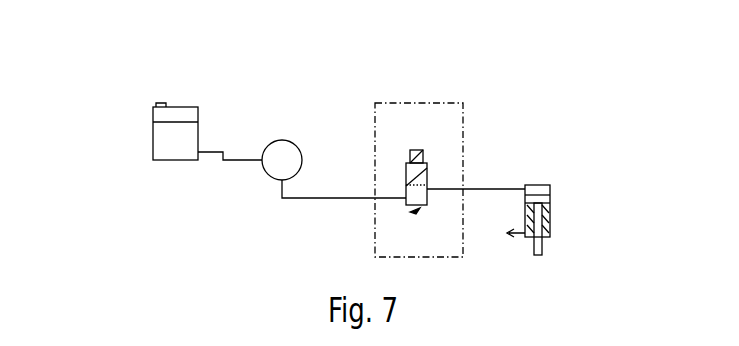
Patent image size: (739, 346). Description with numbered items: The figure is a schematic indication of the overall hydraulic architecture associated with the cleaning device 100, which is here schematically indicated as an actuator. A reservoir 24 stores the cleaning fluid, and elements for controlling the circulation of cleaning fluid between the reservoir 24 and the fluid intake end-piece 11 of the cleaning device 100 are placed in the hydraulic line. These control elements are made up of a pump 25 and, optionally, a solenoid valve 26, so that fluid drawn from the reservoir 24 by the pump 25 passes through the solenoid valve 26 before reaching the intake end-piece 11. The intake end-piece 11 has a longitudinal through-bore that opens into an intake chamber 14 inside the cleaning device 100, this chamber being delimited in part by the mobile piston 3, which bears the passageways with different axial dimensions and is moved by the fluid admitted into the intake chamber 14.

The reservoir 24 is at (153, 148).
The pump 25 is at (282, 140).
The solenoid valve 26 is at (417, 104).
The cleaning device 100 is at (526, 176).
The intake chamber 14 is at (550, 190).
The fluid intake end-piece 11 is at (525, 190).
The mobile piston 3 is at (542, 250).